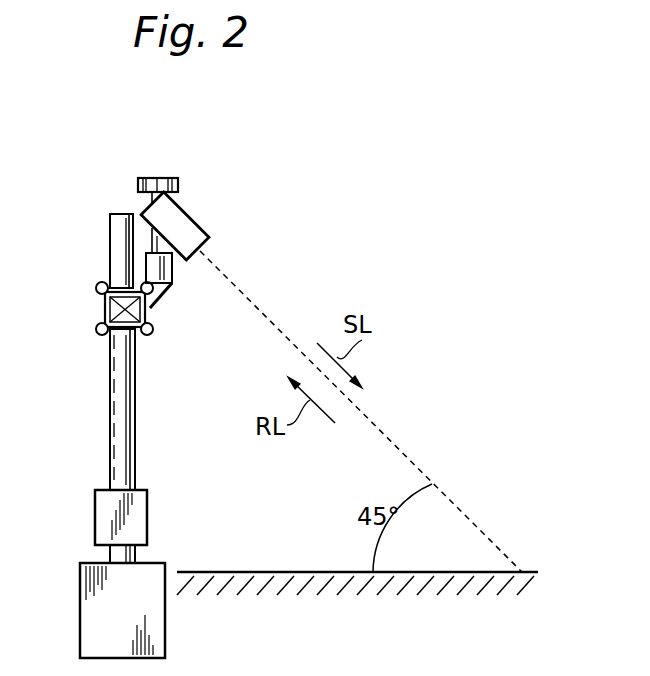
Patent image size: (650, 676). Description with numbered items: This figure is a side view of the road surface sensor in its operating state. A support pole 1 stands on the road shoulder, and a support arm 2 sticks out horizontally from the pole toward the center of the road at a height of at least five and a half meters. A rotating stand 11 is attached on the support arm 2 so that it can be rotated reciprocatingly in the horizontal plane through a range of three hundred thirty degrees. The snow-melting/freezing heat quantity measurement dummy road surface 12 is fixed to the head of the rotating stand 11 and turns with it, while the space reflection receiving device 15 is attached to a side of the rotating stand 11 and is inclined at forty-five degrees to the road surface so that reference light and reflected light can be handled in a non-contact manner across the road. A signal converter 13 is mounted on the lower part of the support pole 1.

The support pole 1 is at (110, 356).
The support arm 2 is at (105, 305).
The rotating stand 11 is at (152, 232).
The snow-melting/freezing heat quantity measurement dummy road surface 12 is at (153, 176).
The signal converter 13 is at (107, 518).
The space reflection receiving device 15 is at (180, 215).